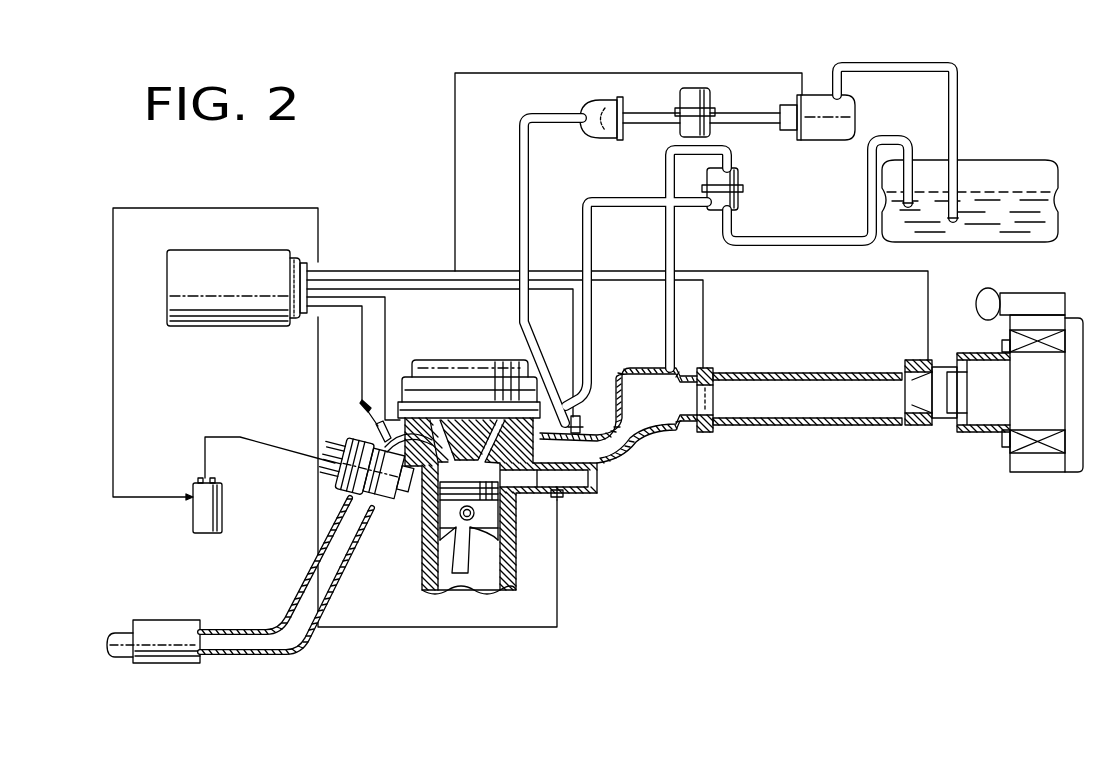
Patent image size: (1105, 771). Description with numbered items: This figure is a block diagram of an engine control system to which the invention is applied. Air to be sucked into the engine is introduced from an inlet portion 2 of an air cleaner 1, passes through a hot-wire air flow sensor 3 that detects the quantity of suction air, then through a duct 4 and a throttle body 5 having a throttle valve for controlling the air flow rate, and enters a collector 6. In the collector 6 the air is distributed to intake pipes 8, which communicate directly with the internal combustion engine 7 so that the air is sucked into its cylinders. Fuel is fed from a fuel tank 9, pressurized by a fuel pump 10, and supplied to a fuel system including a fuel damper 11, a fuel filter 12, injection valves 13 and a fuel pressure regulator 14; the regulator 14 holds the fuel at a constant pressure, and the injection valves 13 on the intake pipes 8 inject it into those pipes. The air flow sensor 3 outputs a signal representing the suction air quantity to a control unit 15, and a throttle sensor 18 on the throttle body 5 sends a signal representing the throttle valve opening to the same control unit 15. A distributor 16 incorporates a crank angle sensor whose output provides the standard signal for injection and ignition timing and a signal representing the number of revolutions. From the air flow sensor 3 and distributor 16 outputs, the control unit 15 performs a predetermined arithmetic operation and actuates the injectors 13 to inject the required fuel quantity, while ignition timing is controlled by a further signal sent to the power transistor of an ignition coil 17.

The air cleaner 1 is at (1045, 470).
The inlet portion 2 is at (986, 290).
The hot-wire air flow sensor 3 is at (935, 433).
The duct 4 is at (825, 427).
The throttle body 5 is at (709, 425).
The collector 6 is at (646, 405).
The internal combustion engine 7 is at (463, 361).
The intake pipes 8 is at (590, 453).
The fuel tank 9 is at (1010, 160).
The fuel pump 10 is at (822, 95).
The fuel damper 11 is at (690, 88).
The fuel filter 12 is at (598, 100).
The injection valves 13 is at (585, 413).
The fuel pressure regulator 14 is at (745, 201).
The control unit 15 is at (186, 328).
The distributor 16 is at (335, 481).
The ignition coil 17 is at (215, 536).
The throttle sensor 18 is at (716, 368).